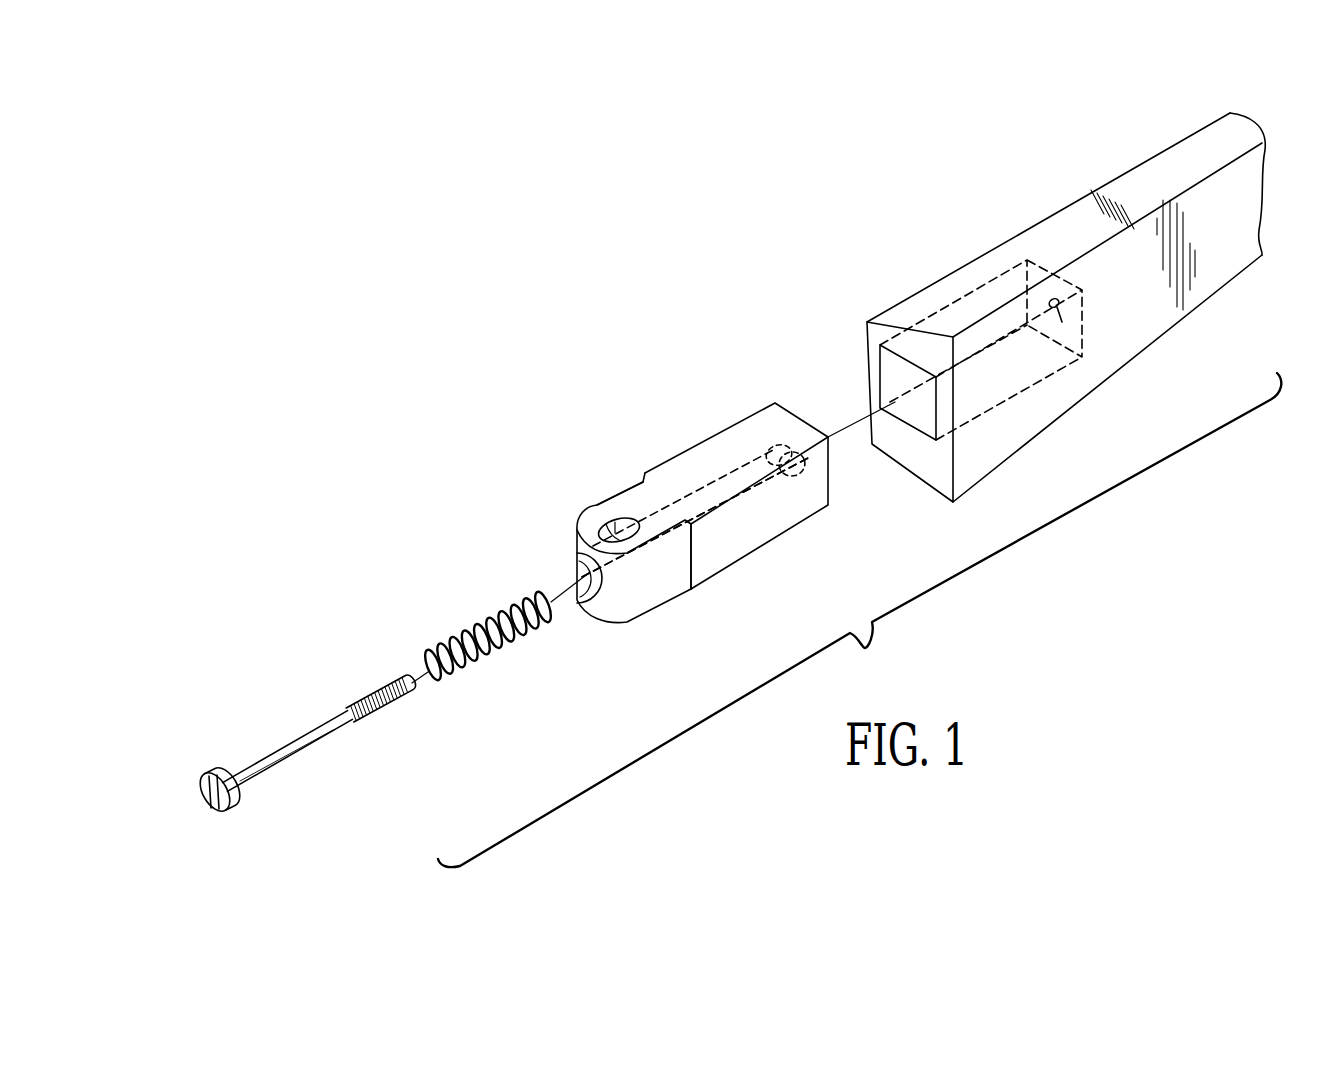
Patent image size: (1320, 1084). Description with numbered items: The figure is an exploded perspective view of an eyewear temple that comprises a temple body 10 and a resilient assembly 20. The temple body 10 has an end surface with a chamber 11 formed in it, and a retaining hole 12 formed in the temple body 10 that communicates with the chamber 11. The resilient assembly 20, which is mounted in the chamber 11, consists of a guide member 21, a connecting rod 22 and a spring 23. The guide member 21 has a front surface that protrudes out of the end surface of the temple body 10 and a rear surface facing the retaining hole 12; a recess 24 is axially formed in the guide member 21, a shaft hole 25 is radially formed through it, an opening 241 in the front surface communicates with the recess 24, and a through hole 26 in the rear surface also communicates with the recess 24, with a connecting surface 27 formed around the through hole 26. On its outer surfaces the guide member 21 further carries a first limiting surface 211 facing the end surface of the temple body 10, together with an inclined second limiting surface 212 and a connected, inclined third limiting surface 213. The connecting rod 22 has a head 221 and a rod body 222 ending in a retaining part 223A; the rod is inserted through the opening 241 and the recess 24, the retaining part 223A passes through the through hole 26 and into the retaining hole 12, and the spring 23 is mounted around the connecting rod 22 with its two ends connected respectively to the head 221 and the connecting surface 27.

The temple body 10 is at (1077, 222).
The chamber 11 is at (903, 372).
The retaining hole 12 is at (1062, 324).
The resilient assembly 20 is at (440, 500).
The guide member 21 is at (757, 428).
The first limiting surface 211 is at (693, 557).
The second limiting surface 212 is at (623, 493).
The third limiting surface 213 is at (636, 484).
The connecting rod 22 is at (340, 764).
The head 221 is at (223, 810).
The rod body 222 is at (287, 757).
The retaining part 223A is at (380, 708).
The spring 23 is at (468, 630).
The recess 24 is at (713, 522).
The opening 241 is at (577, 565).
The shaft hole 25 is at (612, 527).
The through hole 26 is at (807, 462).
The connecting surface 27 is at (793, 480).